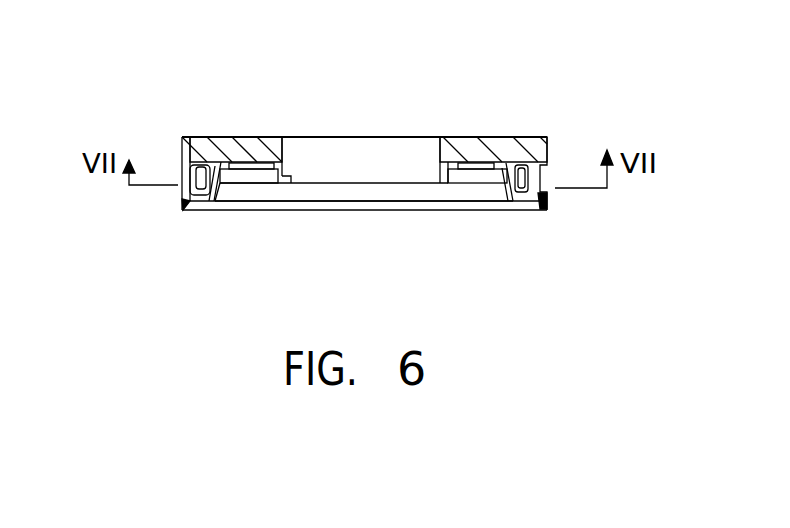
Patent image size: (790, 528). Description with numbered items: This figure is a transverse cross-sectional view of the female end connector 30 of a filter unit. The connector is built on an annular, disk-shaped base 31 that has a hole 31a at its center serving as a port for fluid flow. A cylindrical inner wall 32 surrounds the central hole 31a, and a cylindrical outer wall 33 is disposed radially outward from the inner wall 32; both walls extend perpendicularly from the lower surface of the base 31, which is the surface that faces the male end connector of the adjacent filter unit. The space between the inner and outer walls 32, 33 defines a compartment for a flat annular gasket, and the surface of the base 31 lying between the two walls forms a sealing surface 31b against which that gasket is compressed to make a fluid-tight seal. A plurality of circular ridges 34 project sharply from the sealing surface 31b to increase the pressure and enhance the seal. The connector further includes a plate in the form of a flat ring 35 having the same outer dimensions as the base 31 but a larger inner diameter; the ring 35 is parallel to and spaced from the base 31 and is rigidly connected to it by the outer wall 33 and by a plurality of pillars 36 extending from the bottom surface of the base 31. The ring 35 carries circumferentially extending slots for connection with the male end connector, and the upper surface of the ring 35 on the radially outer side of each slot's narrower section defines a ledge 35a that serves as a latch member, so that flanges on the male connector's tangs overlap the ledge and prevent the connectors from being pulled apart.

The female end connector 30 is at (172, 161).
The base 31 is at (569, 113).
The hole 31a is at (417, 145).
The sealing surface 31b is at (482, 170).
The inner wall 32 is at (290, 178).
The outer wall 33 is at (216, 200).
The circular ridges 34 is at (271, 164).
The ring 35 is at (548, 202).
The ledge 35a is at (540, 190).
The pillars 36 is at (182, 192).